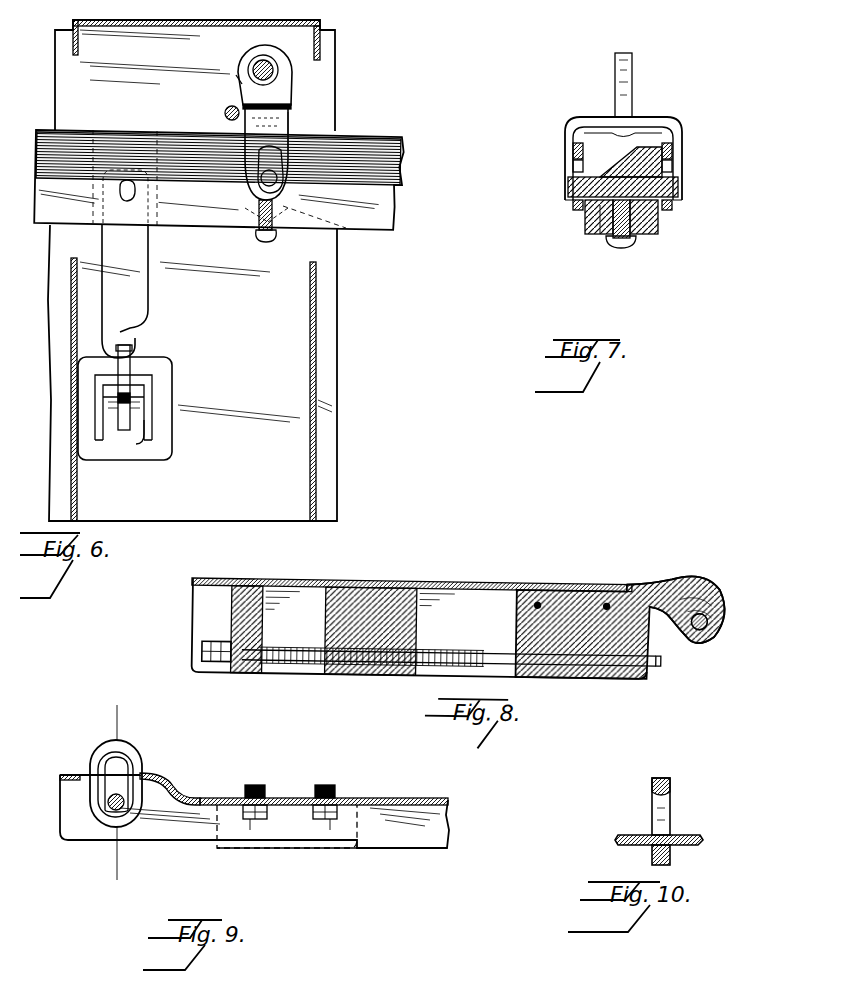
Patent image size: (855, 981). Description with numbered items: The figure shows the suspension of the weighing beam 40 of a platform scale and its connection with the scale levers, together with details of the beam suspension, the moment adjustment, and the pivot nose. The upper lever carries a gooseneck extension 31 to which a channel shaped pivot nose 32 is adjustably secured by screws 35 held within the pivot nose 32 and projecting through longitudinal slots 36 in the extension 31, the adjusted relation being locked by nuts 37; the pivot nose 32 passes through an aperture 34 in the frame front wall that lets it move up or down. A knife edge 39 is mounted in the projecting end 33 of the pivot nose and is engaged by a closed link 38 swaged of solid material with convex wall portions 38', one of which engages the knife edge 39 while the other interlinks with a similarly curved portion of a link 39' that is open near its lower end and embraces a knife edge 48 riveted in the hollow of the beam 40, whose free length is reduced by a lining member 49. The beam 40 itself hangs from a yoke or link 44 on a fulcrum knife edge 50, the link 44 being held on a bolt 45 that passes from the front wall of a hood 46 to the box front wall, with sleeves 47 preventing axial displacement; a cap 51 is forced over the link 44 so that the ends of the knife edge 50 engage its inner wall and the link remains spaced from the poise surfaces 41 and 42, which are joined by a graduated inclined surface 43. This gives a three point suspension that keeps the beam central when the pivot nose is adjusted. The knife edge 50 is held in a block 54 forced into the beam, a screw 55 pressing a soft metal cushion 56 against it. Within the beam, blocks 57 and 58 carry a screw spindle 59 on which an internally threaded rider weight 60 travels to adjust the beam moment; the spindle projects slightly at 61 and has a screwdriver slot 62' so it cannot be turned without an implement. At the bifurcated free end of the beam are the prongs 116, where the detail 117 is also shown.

In FIG. 9, the gooseneck extension 31 is at (398, 800).
In FIG. 6, the pivot nose 32 is at (152, 380).
In FIG. 9, the pivot nose 32 is at (195, 800).
In FIG. 9, the projecting end of the pivot nose 33 is at (172, 782).
In FIG. 6, the aperture 34 is at (130, 456).
In FIG. 9, the aperture 34 is at (287, 826).
In FIG. 9, the screws 35 is at (324, 819).
In FIG. 9, the longitudinal slots 36 is at (258, 800).
In FIG. 9, the nuts 37 is at (330, 800).
In FIG. 6, the link 38 is at (156, 373).
In FIG. 9, the link 38 is at (131, 798).
In FIG. 10, the link 38 is at (670, 808).
In FIG. 10, the convex wall portions 38' is at (688, 859).
In FIG. 6, the knife edge 39 is at (175, 420).
In FIG. 9, the knife edge 39 is at (141, 829).
In FIG. 6, the link 39' is at (152, 291).
In FIG. 6, the beam 40 is at (292, 82).
In FIG. 7, the beam 40 is at (632, 70).
In FIG. 6, the poise surface 41 is at (378, 218).
In FIG. 7, the poise surface 41 is at (590, 216).
In FIG. 7, the poise surface 42 is at (658, 224).
In FIG. 6, the inclined surface 43 is at (380, 158).
In FIG. 7, the inclined surface 43 is at (625, 166).
In FIG. 6, the link 44 is at (292, 150).
In FIG. 7, the link 44 is at (674, 142).
In FIG. 6, the bolt 45 is at (238, 76).
In FIG. 6, the hood 46 is at (316, 396).
In FIG. 6, the sleeves 47 is at (252, 62).
In FIG. 6, the knife edge 48 is at (132, 198).
In FIG. 6, the lining member 49 is at (150, 228).
In FIG. 6, the fulcrum knife edge 50 is at (225, 116).
In FIG. 7, the fulcrum knife edge 50 is at (680, 188).
In FIG. 7, the cap 51 is at (674, 165).
In FIG. 6, the block 54 is at (350, 236).
In FIG. 7, the block 54 is at (618, 238).
In FIG. 6, the screw 55 is at (266, 242).
In FIG. 7, the screw 55 is at (633, 244).
In FIG. 7, the cushion 56 is at (600, 234).
In FIG. 8, the block 57 is at (258, 672).
In FIG. 8, the block 58 is at (580, 596).
In FIG. 8, the screw spindle 59 is at (470, 649).
In FIG. 8, the rider weight 60 is at (382, 598).
In FIG. 8, the projecting end of the spindle 61 is at (648, 672).
In FIG. 8, the slot 62' is at (695, 666).
In FIG. 8, the prongs 116 is at (726, 588).
In FIG. 8, the hook hole 117 is at (710, 614).